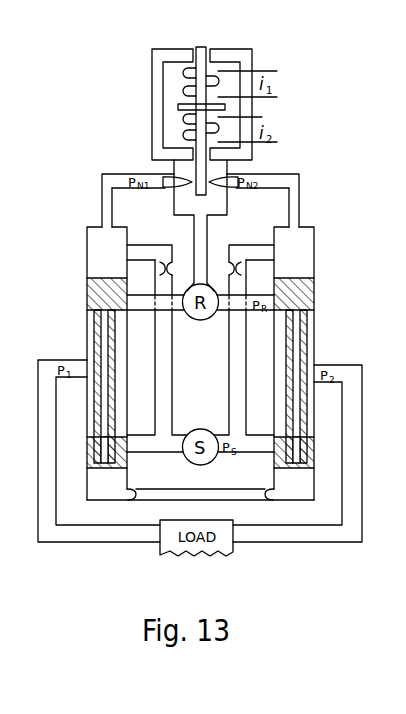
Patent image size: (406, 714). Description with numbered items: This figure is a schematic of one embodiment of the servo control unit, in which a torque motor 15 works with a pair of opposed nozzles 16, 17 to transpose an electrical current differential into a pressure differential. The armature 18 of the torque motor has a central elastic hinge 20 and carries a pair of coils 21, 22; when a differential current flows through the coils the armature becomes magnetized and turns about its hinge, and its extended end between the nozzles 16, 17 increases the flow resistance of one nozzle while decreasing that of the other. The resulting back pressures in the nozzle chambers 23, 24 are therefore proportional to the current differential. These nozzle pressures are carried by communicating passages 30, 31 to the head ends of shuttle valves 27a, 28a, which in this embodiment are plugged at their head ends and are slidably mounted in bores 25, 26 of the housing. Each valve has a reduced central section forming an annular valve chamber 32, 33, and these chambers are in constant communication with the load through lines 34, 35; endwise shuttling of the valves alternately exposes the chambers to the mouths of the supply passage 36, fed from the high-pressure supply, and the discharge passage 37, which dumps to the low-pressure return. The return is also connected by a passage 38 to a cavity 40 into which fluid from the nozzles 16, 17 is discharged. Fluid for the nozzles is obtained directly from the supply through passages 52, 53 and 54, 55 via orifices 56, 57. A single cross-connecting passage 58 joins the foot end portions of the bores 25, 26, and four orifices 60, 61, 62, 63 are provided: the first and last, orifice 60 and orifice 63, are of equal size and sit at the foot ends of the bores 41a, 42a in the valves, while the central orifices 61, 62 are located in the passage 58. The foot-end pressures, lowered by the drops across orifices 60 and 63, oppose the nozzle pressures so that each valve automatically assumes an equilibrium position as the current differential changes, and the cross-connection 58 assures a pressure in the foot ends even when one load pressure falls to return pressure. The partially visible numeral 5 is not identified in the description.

The torque motor 15 is at (156, 72).
The nozzle 16 is at (180, 178).
The nozzle 17 is at (222, 178).
The armature 18 is at (205, 51).
The central elastic hinge 20 is at (178, 107).
The coil 21 is at (268, 70).
The coil 22 is at (262, 117).
The nozzle chamber 23 is at (163, 188).
The nozzle chamber 24 is at (237, 188).
The bore 25 is at (98, 250).
The bore 26 is at (302, 255).
The shuttle valve 27a is at (88, 290).
The shuttle valve 28a is at (315, 297).
The communicating passage 30 is at (102, 200).
The communicating passage 31 is at (300, 202).
The annular valve chamber 32 is at (88, 330).
The annular valve chamber 33 is at (308, 332).
The line 34 is at (42, 440).
The line 35 is at (348, 408).
The supply passage 36 is at (152, 450).
The discharge passage 37 is at (136, 310).
The passage 38 is at (207, 232).
The cavity 40 is at (193, 207).
The bore 41a is at (105, 346).
The bore 42a is at (292, 347).
The passage 52 is at (163, 372).
The passage 54 is at (229, 387).
The passage 53 is at (153, 237).
The passage 55 is at (246, 250).
The orifice 56 is at (160, 268).
The orifice 57 is at (241, 268).
The cross-connecting passage 58 is at (228, 492).
The orifice 60 is at (102, 468).
The orifice 63 is at (300, 470).
The orifice 61 is at (132, 499).
The orifice 62 is at (268, 495).
The conduit (partially visible) 5 is at (4, 414).